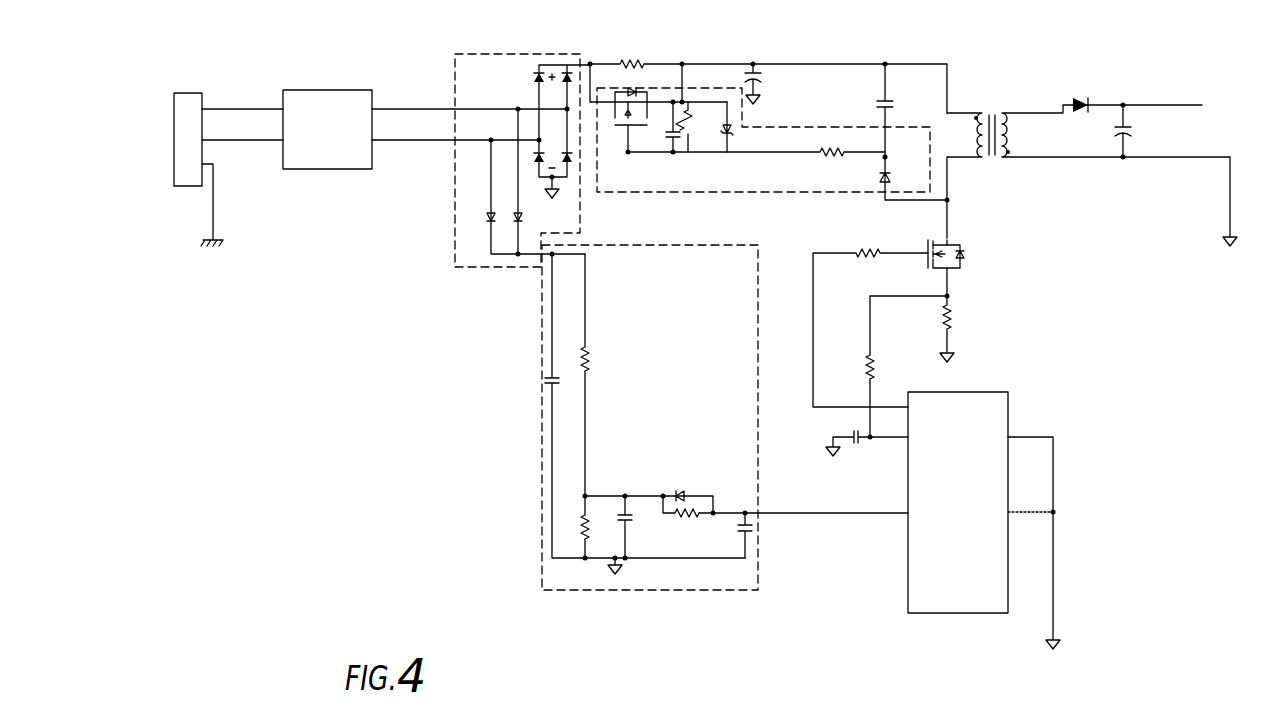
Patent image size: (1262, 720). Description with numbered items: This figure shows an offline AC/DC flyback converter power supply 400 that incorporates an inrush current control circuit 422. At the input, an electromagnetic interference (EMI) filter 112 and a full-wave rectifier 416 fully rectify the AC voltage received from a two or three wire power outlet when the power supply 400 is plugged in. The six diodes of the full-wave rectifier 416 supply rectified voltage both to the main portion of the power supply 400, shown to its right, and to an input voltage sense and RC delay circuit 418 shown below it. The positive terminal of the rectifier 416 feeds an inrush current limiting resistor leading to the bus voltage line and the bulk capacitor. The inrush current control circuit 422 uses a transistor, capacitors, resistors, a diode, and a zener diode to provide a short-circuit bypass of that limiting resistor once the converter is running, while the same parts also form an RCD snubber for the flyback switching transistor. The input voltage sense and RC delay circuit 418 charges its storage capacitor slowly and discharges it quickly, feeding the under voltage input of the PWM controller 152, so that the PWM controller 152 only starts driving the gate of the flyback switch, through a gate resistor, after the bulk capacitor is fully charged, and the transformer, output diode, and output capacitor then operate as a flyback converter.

The offline AC/DC flyback converter power supply 400 is at (683, 648).
The electromagnetic interference (EMI) filter 112 is at (353, 171).
The full-wave rectifier 416 is at (488, 268).
The inrush current control circuit 422 is at (744, 193).
The input voltage sense and RC delay circuit 418 is at (542, 540).
The PWM controller 152 is at (975, 392).